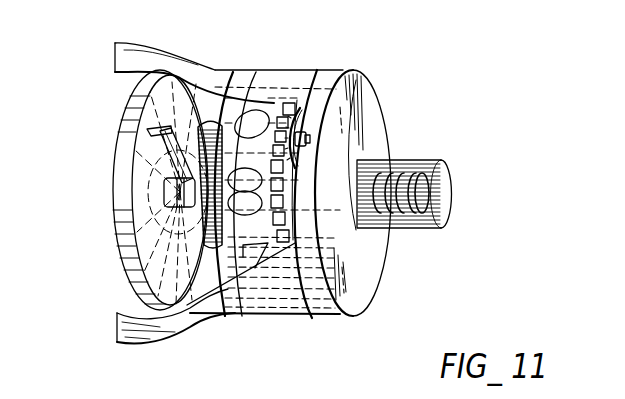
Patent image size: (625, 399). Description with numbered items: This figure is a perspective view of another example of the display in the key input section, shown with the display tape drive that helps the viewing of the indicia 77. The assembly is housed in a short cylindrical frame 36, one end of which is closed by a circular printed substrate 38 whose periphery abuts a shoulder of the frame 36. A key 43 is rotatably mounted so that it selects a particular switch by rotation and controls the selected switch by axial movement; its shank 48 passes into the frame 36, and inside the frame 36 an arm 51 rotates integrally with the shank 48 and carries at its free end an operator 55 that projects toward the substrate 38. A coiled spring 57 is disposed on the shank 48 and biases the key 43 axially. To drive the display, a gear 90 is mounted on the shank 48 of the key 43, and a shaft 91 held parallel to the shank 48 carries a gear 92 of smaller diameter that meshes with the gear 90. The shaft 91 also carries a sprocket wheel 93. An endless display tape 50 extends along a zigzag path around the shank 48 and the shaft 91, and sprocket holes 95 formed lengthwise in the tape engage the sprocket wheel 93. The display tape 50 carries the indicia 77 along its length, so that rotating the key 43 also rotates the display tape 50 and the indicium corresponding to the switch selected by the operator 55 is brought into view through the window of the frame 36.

The cylindrical frame 36 is at (177, 328).
The circular printed substrate 38 is at (121, 218).
The key 43 is at (408, 160).
The shank 48 is at (362, 240).
The display tape 50 is at (257, 205).
The arm 51 is at (160, 171).
The operator 55 is at (148, 128).
The coiled spring 57 is at (418, 214).
The indicia 77 is at (266, 246).
The gear 90 is at (224, 300).
The shaft 91 is at (247, 88).
The gear 92 is at (211, 118).
The sprocket wheel 93 is at (312, 142).
The sprocket holes 95 is at (297, 96).